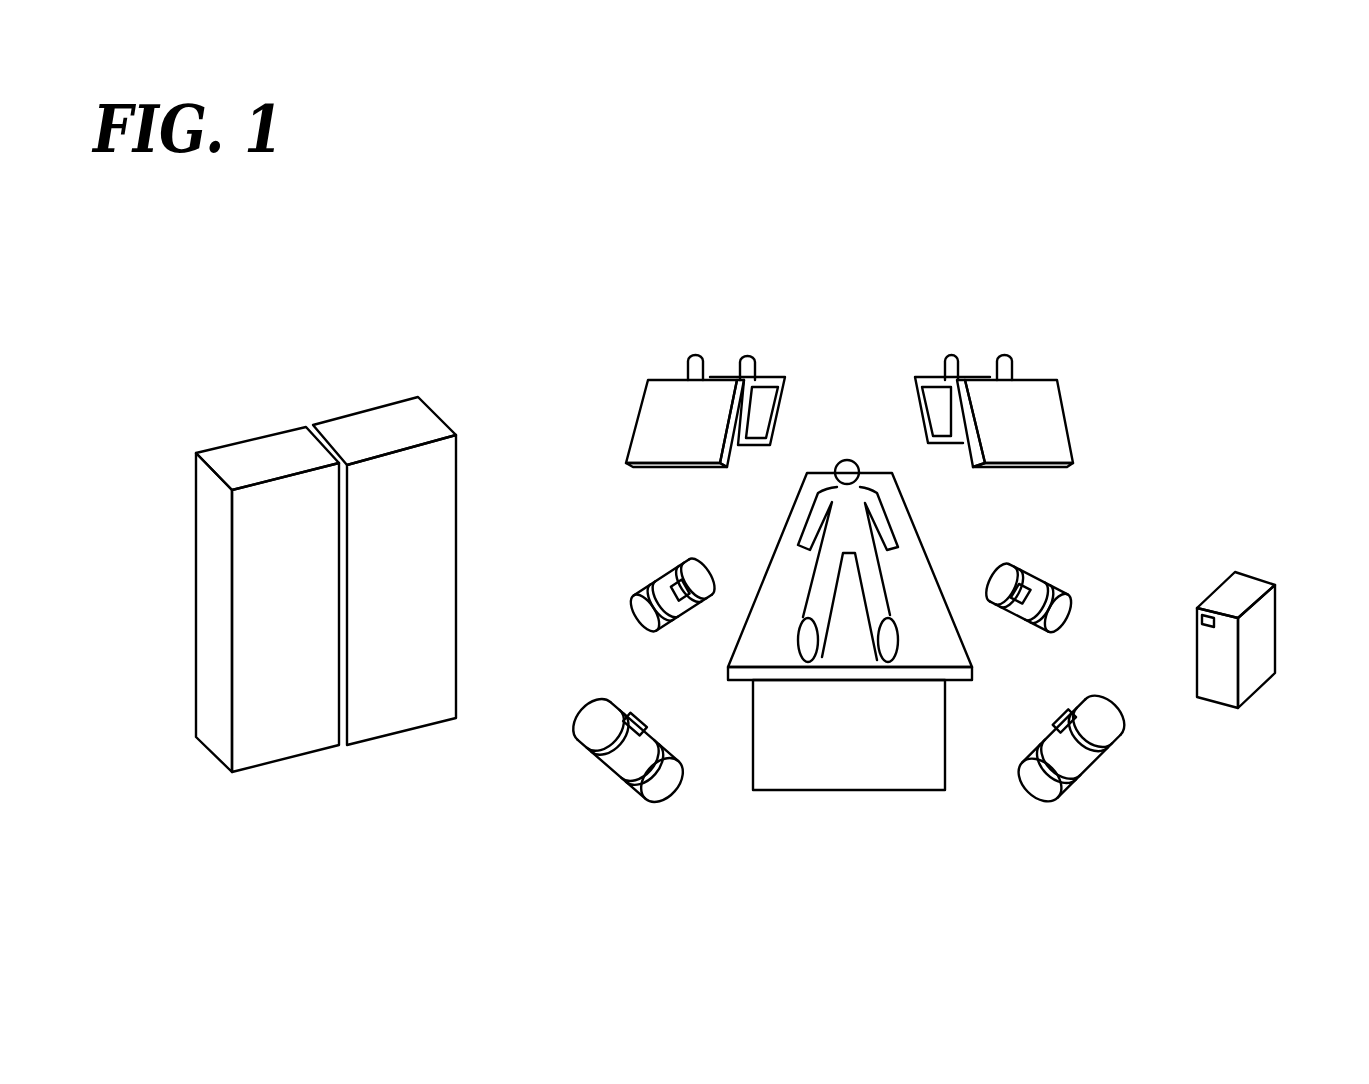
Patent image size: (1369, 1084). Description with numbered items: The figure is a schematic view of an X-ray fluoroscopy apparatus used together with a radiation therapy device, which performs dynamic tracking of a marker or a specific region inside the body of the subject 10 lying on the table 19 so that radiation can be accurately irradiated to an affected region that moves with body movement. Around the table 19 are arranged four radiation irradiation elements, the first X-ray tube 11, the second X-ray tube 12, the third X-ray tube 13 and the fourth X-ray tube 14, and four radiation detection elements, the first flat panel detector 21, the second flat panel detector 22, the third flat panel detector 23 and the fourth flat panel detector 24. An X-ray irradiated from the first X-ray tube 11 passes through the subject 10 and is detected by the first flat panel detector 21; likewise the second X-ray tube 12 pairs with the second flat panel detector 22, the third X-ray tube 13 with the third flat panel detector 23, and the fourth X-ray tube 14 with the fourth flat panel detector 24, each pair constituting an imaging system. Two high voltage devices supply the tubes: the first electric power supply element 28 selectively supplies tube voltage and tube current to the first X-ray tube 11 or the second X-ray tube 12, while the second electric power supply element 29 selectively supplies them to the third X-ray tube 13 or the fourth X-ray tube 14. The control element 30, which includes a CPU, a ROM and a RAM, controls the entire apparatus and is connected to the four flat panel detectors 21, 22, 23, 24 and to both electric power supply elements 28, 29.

The subject 10 is at (857, 520).
The first X-ray tube 11 is at (670, 583).
The second X-ray tube 12 is at (1093, 748).
The third X-ray tube 13 is at (607, 755).
The fourth X-ray tube 14 is at (1030, 577).
The table 19 is at (947, 642).
The first flat panel detector 21 is at (1045, 423).
The second flat panel detector 22 is at (765, 400).
The third flat panel detector 23 is at (932, 408).
The fourth flat panel detector 24 is at (657, 411).
The first electric power supply element 28 is at (266, 458).
The second electric power supply element 29 is at (390, 420).
The control element 30 is at (1242, 590).